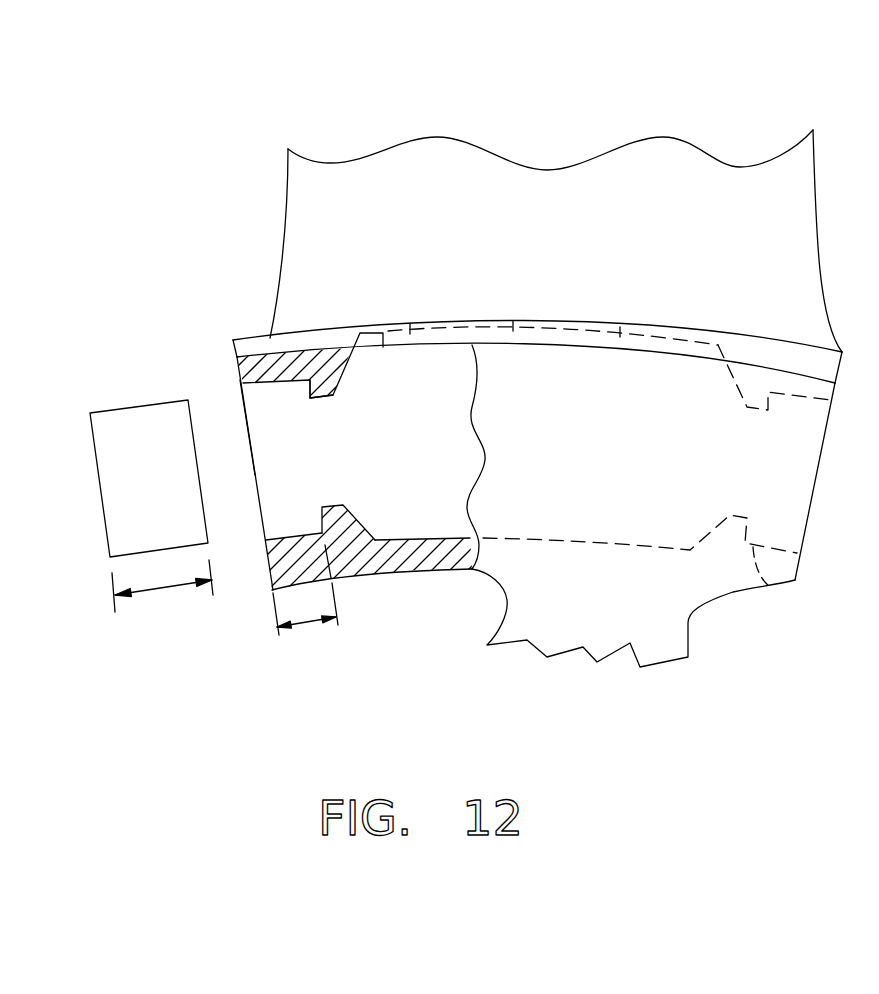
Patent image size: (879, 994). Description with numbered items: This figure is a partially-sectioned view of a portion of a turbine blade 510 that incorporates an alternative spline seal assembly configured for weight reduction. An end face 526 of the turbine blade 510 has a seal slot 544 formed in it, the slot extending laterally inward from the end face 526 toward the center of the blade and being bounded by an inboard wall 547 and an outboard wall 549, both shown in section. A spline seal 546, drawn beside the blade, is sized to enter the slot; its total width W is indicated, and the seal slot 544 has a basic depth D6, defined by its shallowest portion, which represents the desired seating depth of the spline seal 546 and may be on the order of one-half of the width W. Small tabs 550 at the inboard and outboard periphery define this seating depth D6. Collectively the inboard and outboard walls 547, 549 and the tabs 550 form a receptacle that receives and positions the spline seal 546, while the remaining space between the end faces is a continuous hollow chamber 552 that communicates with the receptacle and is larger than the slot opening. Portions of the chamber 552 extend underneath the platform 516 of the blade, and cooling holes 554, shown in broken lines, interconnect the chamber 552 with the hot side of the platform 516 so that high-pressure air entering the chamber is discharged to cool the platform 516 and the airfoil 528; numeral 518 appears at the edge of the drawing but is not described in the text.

The turbine blade 510 is at (643, 92).
The airfoil 528 is at (588, 222).
The platform 516 is at (812, 345).
The platform edge 518 is at (857, 347).
The end face 526 is at (235, 353).
The cooling holes 554 is at (517, 320).
The hollow chamber 552 is at (422, 447).
The seal slot 544 is at (247, 435).
The outboard wall 549 is at (383, 335).
The tabs 550 is at (324, 398).
The inboard wall 547 is at (438, 540).
The spline seal 546 is at (180, 474).
The total width of the spline seal W is at (163, 587).
The basic depth (seating depth) of the seal slot D6 is at (308, 622).